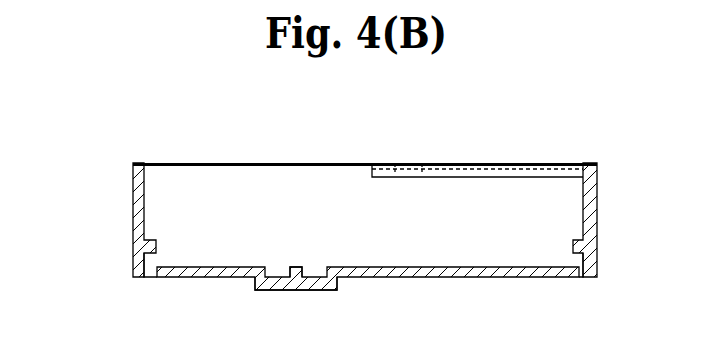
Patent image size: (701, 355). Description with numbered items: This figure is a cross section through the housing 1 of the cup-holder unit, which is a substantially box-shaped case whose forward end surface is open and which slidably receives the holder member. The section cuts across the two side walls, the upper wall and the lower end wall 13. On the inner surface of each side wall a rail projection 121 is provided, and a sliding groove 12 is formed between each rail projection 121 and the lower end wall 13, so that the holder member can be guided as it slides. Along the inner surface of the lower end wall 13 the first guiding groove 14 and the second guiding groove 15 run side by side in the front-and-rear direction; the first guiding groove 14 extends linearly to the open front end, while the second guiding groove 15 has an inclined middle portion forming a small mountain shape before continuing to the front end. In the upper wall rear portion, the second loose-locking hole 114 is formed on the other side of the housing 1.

The housing 1 is at (366, 195).
The sliding groove 12 is at (153, 260).
The rail projection 121 is at (156, 240).
The lower end wall 13 is at (428, 277).
The first guiding groove 14 is at (267, 291).
The second guiding groove 15 is at (307, 290).
The second loose-locking hole 114 is at (408, 166).